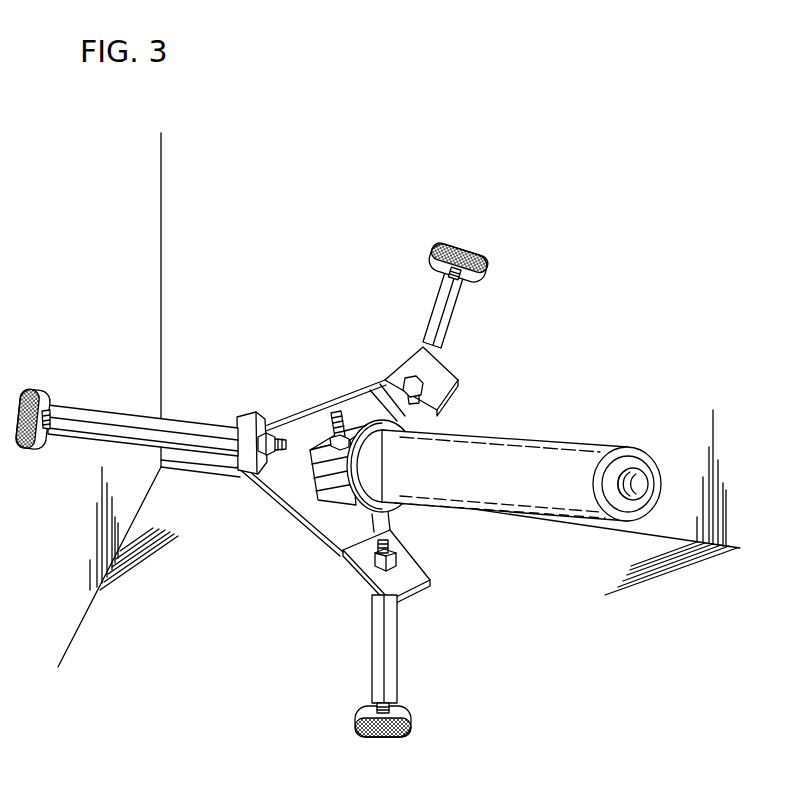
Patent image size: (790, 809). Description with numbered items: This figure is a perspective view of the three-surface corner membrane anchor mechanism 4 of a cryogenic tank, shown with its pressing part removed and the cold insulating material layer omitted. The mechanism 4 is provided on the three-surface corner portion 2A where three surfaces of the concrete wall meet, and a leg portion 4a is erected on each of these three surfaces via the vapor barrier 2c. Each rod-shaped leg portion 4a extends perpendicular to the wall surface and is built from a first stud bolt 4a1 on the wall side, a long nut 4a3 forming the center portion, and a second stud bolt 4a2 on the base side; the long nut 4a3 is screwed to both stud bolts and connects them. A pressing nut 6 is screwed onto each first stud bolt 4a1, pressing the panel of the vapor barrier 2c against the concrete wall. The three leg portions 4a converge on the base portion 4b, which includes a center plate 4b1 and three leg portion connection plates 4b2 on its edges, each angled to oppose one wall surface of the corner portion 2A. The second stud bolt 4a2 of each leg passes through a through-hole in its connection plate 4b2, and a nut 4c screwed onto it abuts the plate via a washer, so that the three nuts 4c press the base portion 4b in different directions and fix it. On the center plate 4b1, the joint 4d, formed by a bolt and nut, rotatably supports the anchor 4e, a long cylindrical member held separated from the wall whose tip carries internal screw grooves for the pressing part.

The three-surface corner portion 2A is at (232, 307).
The vapor barrier 2c is at (195, 188).
The three-surface corner membrane anchor mechanism 4 is at (635, 305).
The leg portion 4a is at (275, 476).
The first stud bolt 4a1 is at (256, 476).
The second stud bolt 4a2 is at (303, 414).
The long nut 4a3 is at (195, 420).
The base portion 4b is at (411, 448).
The center plate 4b1 is at (302, 483).
The leg portion connection plate 4b2 is at (240, 472).
The nut 4c is at (263, 434).
The joint 4d is at (351, 411).
The anchor 4e is at (556, 456).
The pressing nut 6 is at (46, 432).